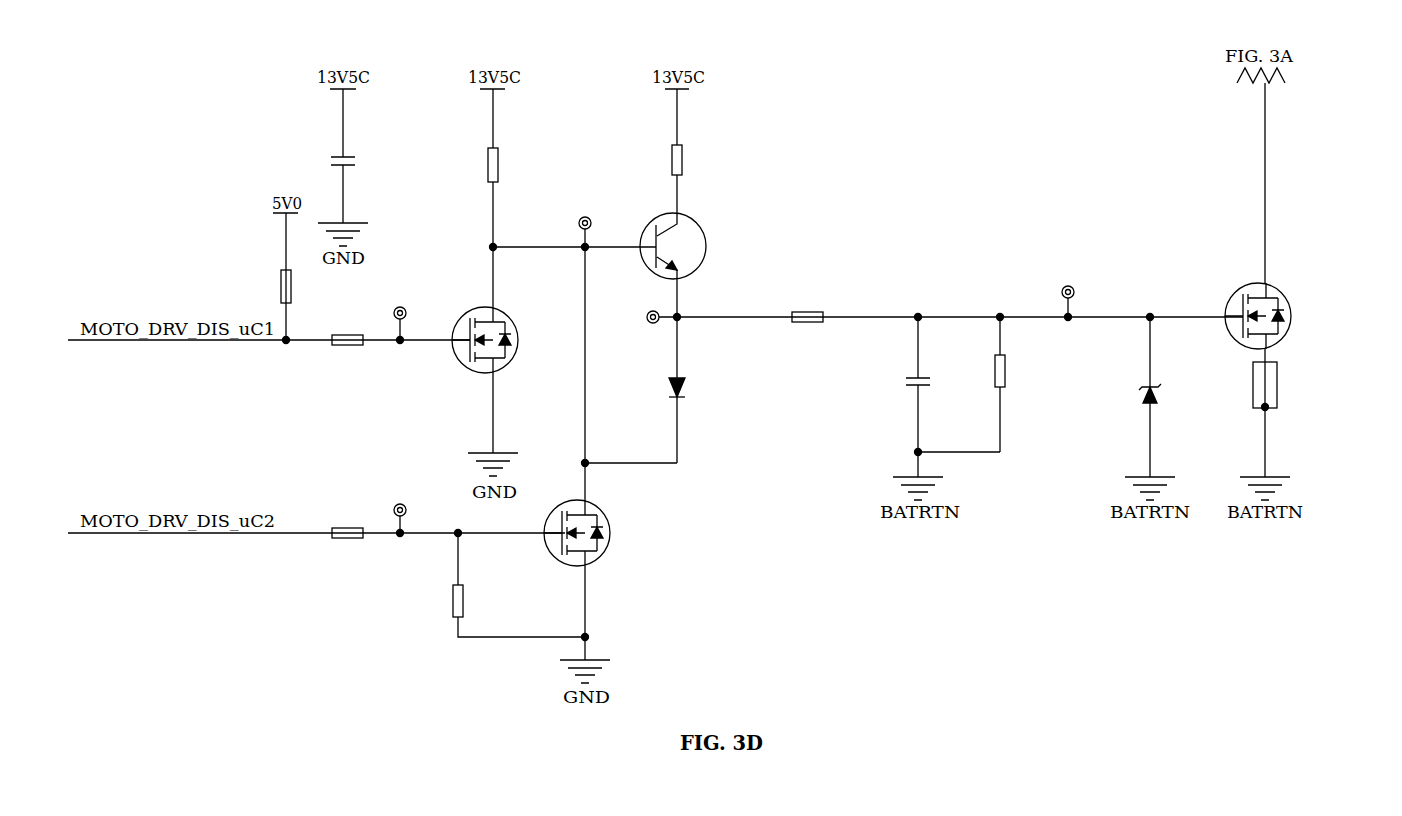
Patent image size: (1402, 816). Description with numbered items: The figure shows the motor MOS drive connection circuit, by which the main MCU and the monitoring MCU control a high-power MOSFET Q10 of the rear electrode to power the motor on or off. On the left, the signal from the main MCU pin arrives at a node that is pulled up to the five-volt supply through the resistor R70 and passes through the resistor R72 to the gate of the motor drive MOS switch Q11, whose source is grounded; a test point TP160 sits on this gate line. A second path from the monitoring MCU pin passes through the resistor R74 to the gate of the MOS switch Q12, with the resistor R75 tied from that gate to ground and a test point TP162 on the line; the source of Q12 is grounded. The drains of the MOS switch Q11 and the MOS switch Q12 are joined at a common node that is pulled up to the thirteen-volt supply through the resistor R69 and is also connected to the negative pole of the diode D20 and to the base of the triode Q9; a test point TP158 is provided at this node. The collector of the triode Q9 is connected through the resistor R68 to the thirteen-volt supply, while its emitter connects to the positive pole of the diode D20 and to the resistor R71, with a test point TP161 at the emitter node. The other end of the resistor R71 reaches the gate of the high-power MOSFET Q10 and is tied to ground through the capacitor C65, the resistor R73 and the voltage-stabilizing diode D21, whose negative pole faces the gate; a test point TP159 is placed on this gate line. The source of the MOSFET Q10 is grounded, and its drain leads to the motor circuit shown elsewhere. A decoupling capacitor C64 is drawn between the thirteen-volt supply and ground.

The capacitor 0.1uF C64 is at (404, 174).
The capacitor C65 is at (953, 402).
The resistor R68 is at (743, 161).
The resistor R69 is at (556, 165).
The resistor R70 is at (350, 284).
The resistor R71 is at (850, 314).
The resistor R72 is at (383, 339).
The resistor R73 is at (1060, 373).
The resistor R74 is at (373, 534).
The resistor R75 is at (519, 602).
The triode Q9 is at (745, 246).
The high-power MOSFET Q10 is at (1304, 337).
The MOS switch Q11 is at (516, 349).
The MOS switch Q12 is at (628, 539).
The diode D20 is at (762, 388).
The voltage-stabilizing diode D21 is at (1192, 400).
The test point TP158 is at (600, 212).
The test point TP159 is at (1085, 280).
The test point TP160 is at (426, 308).
The test point TP161 is at (631, 308).
The test point TP162 is at (417, 499).